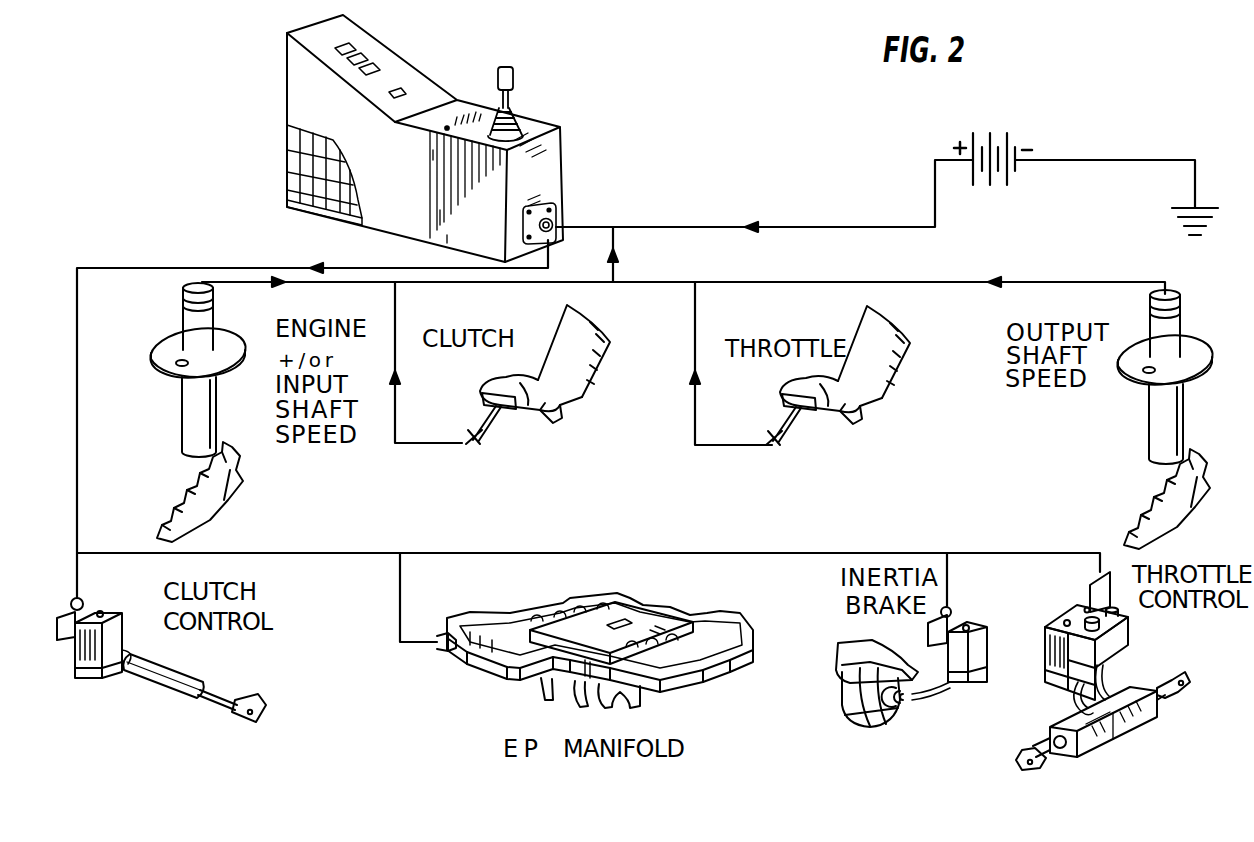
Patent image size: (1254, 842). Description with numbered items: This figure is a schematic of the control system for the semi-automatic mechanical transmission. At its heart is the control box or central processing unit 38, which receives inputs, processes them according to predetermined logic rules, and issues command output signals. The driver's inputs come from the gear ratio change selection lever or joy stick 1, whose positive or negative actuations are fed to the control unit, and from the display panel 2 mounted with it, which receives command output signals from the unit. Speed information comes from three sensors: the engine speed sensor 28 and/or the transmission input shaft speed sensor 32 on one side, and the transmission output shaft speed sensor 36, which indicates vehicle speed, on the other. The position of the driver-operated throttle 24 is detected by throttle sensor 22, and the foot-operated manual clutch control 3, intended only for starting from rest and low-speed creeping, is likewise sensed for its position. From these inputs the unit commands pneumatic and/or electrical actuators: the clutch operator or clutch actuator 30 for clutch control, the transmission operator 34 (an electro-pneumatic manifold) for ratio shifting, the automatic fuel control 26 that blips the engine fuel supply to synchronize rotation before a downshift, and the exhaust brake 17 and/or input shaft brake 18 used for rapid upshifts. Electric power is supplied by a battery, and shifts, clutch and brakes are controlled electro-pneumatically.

The gear shift lever 1 is at (513, 78).
The display 2 is at (427, 138).
The manual clutch control 3 is at (507, 426).
The exhaust brake 17 is at (976, 602).
The input shaft brake 18 is at (947, 647).
The throttle sensor 22 is at (810, 440).
The throttle 24 is at (841, 400).
The fuel control 26 is at (1152, 640).
The engine speed sensor 28 is at (169, 412).
The clutch actuator 30 is at (218, 657).
The input shaft speed sensor 32 is at (169, 412).
The transmission operator 34 is at (714, 601).
The output shaft speed sensor 36 is at (1120, 444).
The central processing unit 38 is at (414, 194).